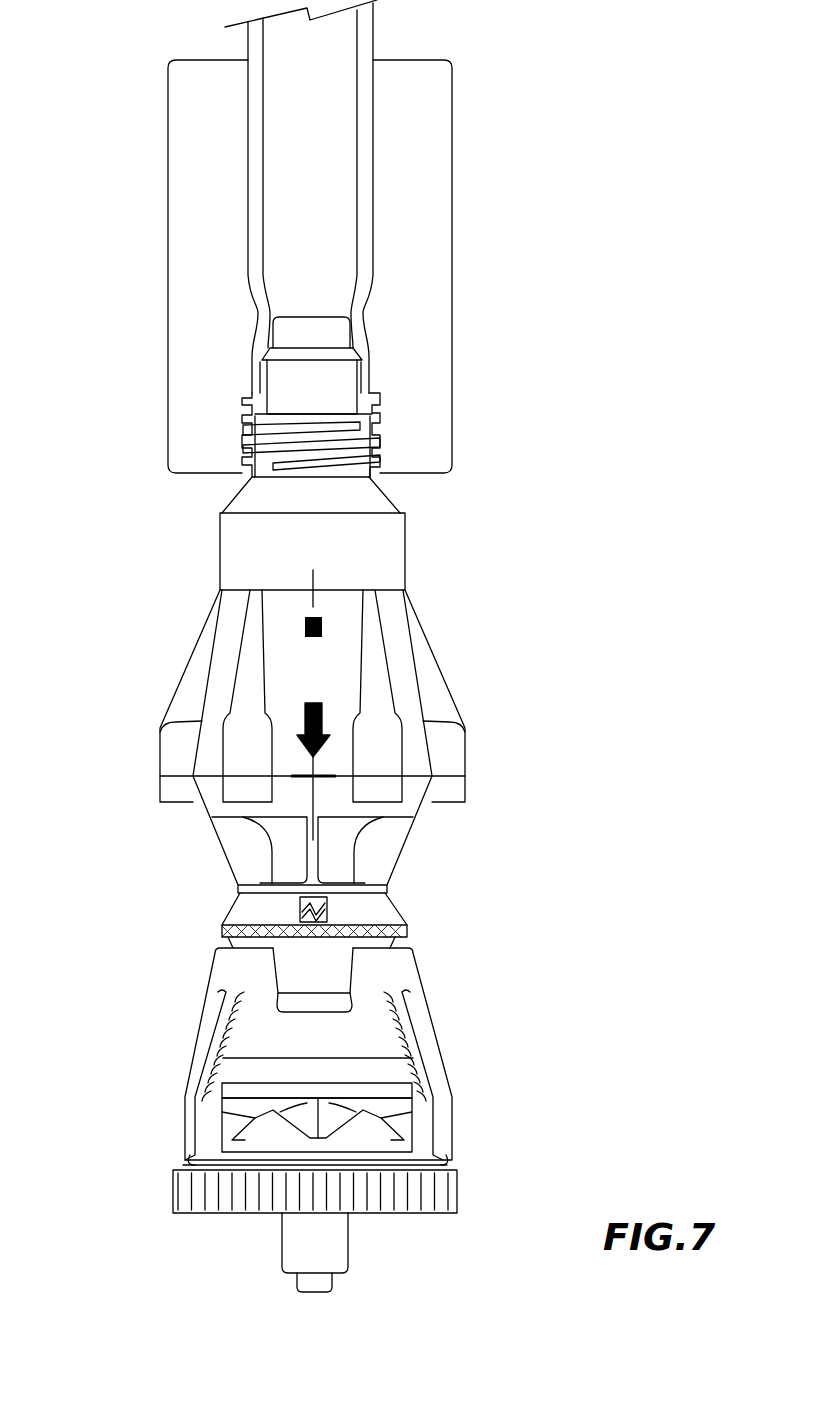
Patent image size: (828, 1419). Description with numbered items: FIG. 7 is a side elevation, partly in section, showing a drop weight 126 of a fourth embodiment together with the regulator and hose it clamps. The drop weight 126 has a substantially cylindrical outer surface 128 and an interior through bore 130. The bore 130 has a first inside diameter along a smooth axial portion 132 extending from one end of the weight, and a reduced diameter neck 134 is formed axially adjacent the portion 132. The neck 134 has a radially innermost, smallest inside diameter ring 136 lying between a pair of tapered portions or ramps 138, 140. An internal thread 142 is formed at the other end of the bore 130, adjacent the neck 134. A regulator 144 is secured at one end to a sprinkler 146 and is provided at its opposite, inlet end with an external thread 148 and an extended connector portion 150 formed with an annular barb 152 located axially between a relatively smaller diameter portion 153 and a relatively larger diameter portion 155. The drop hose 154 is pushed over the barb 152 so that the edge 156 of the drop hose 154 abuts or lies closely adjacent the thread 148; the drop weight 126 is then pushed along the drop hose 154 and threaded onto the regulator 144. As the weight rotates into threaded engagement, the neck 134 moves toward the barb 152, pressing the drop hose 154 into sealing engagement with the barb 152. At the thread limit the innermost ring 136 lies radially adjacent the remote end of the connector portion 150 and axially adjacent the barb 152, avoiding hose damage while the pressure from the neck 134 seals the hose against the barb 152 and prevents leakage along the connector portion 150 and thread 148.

The drop weight 126 is at (153, 135).
The substantially cylindrical outer surface 128 is at (453, 248).
The interior through bore 130 is at (248, 195).
The smooth axial portion 132 is at (247, 230).
The reduced diameter neck 134 is at (256, 314).
The radially innermost ring 136 is at (350, 333).
The tapered portion 138 is at (250, 293).
The tapered portion 140 is at (262, 338).
The internal thread 142 is at (383, 413).
The regulator 144 is at (440, 655).
The sprinkler 146 is at (430, 1003).
The external thread 148 is at (302, 453).
The extended connector portion 150 is at (333, 318).
The annular barb 152 is at (337, 358).
The smaller diameter portion 153 is at (283, 333).
The drop hose 154 is at (357, 150).
The larger diameter portion 155 is at (292, 380).
The edge of the drop hose 156 is at (247, 397).